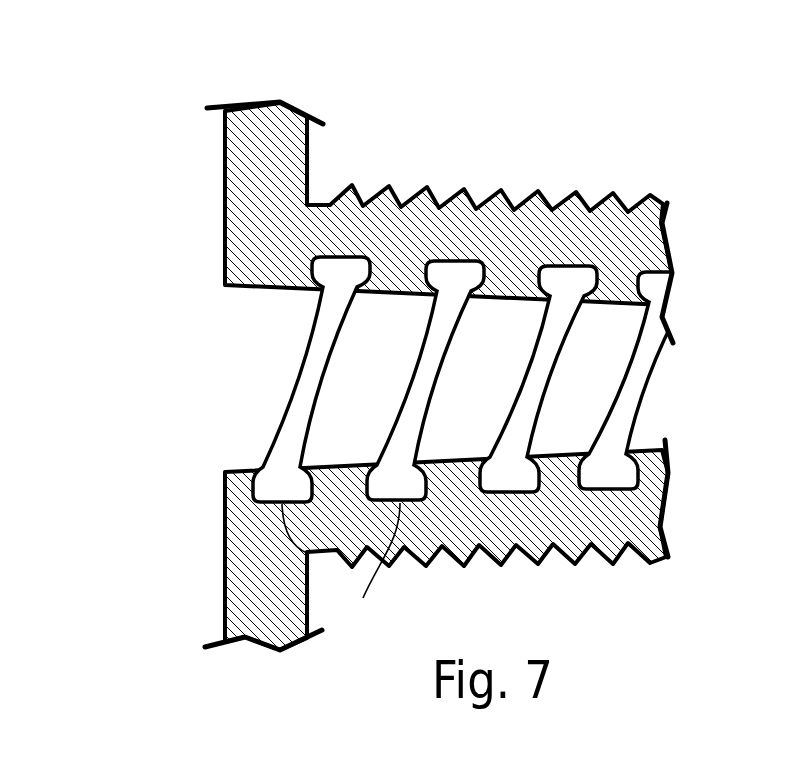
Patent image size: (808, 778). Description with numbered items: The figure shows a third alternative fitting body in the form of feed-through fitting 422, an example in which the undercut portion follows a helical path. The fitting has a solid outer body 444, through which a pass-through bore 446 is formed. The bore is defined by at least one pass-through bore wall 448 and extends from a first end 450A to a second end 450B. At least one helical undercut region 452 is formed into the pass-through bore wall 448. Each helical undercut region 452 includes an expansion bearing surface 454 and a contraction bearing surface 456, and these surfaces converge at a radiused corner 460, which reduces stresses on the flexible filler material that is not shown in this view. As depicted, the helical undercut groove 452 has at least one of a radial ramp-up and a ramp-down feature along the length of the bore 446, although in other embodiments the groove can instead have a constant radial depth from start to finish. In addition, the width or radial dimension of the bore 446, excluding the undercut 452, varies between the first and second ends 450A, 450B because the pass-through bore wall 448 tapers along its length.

The feed-through fitting 422 is at (565, 110).
The solid outer body 444 is at (270, 168).
The pass-through bore 446 is at (282, 352).
The pass-through bore wall 448 is at (453, 447).
The first end 450A is at (263, 382).
The second end 450B is at (647, 414).
The helical undercut region 452 is at (347, 244).
The expansion bearing surface 454 is at (307, 560).
The contraction bearing surface 456 is at (477, 476).
The radiused corner 460 is at (328, 447).